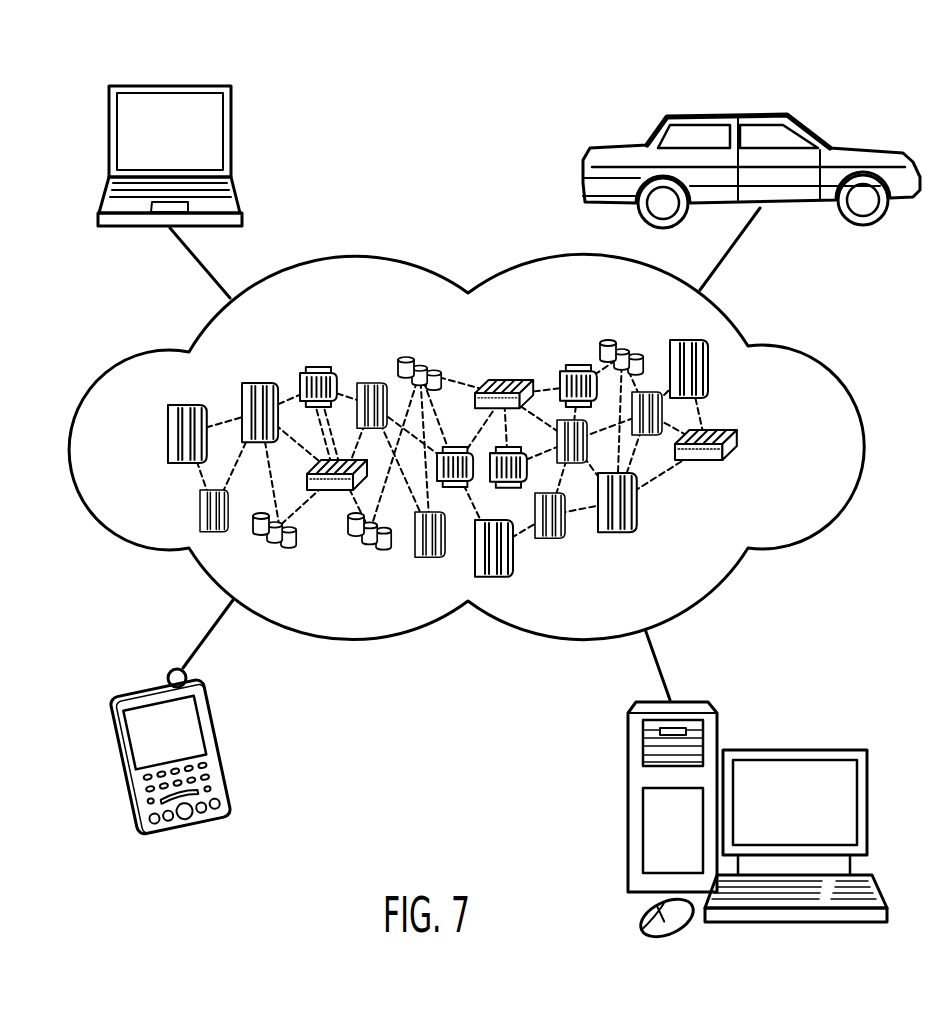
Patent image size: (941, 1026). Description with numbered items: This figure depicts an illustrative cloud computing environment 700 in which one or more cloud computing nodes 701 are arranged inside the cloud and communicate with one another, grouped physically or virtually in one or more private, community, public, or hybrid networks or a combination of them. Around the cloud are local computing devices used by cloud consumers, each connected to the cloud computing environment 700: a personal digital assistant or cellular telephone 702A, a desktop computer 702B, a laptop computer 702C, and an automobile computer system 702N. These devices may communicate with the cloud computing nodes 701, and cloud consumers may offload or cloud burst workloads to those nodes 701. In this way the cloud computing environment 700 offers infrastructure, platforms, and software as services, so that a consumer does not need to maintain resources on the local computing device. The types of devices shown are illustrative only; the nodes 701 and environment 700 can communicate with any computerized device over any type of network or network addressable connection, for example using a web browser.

The cloud computing environment 700 is at (808, 350).
The cloud computing nodes 701 is at (752, 449).
The personal digital assistant (PDA) or cellular telephone 702A is at (150, 690).
The desktop computer 702B is at (793, 748).
The laptop computer 702C is at (170, 84).
The automobile computer system 702N is at (730, 113).